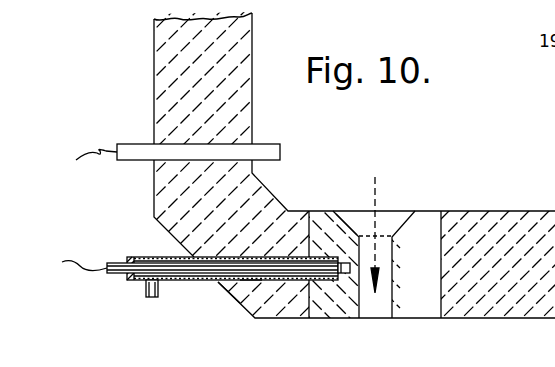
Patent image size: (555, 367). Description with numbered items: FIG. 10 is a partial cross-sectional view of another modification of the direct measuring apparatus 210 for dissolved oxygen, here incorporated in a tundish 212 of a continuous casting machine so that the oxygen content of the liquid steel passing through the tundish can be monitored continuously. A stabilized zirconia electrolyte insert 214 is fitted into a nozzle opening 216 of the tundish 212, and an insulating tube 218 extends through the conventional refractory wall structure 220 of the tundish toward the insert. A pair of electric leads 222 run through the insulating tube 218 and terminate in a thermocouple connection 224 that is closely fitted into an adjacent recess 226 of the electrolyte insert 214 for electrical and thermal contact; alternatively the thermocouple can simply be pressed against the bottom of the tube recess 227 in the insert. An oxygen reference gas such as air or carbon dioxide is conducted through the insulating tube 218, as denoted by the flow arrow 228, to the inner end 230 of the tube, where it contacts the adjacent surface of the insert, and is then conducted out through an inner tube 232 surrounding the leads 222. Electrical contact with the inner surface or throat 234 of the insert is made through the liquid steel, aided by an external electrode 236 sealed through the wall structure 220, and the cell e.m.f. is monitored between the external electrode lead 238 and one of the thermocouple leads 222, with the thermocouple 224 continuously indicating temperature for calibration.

The direct measuring apparatus 210 is at (214, 290).
The tundish 212 is at (503, 211).
The electrolyte insert 214 is at (421, 298).
The nozzle opening 216 is at (443, 225).
The insulating tube 218 is at (250, 282).
The refractory wall structure 220 is at (258, 232).
The electric leads 222 is at (76, 272).
The thermocouple connection 224 is at (361, 282).
The recess 226 is at (375, 252).
The tube recess 227 is at (320, 283).
The flow arrow 228 is at (152, 302).
The inner end of insulating tube 230 is at (336, 262).
The inner tube 232 is at (168, 263).
The throat 234 is at (386, 240).
The external electrode 236 is at (262, 153).
The external electrode lead 238 is at (75, 161).